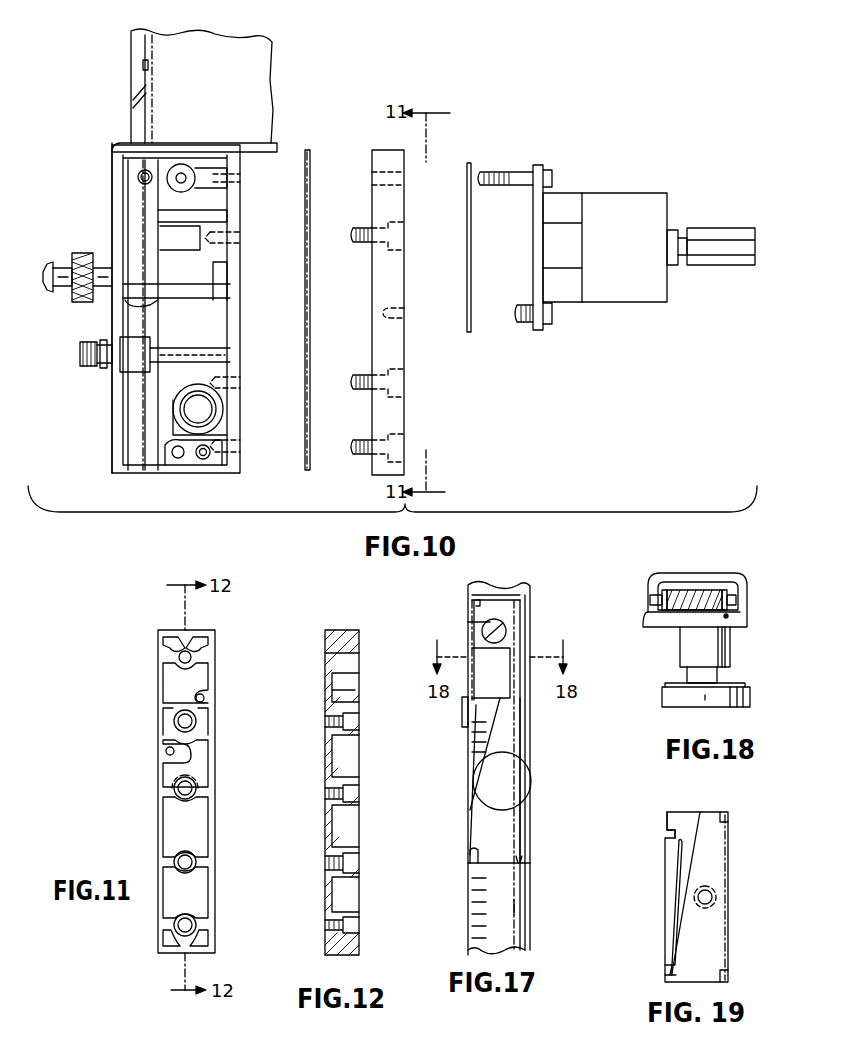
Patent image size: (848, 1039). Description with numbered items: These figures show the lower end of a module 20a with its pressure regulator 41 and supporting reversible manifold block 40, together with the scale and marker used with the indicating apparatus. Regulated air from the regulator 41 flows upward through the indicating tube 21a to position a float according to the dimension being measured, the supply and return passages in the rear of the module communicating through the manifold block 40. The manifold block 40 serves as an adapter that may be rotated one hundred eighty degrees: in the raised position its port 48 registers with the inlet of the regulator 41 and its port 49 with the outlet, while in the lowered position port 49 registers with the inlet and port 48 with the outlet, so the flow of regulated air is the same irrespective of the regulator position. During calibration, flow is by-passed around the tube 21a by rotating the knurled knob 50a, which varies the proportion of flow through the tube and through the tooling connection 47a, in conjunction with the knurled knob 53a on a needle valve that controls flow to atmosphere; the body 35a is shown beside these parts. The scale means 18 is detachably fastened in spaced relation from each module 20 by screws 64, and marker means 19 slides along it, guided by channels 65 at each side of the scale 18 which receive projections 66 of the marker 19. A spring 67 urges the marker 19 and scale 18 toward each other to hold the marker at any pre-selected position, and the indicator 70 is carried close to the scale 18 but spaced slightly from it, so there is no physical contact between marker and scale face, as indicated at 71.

In FIG. 10, the indicating tube 21a is at (131, 46).
In FIG. 10, the module 20a is at (101, 112).
In FIG. 10, the knurled knob 50a is at (82, 254).
In FIG. 10, the knurled knob 53a is at (52, 262).
In FIG. 10, the tooling connection 47a is at (80, 350).
In FIG. 10, the housing 35a is at (240, 417).
In FIG. 10, the manifold block 40 is at (416, 419).
In FIG. 11, the manifold block 40 is at (148, 830).
In FIG. 12, the manifold block 40 is at (315, 835).
In FIG. 10, the regulator 41 is at (624, 186).
In FIG. 11, the port 48 is at (166, 751).
In FIG. 11, the port 49 is at (205, 698).
In FIG. 12, the port 49 is at (362, 686).
In FIG. 17, the module 20 is at (519, 581).
In FIG. 17, the scale means 18 is at (505, 607).
In FIG. 18, the scale means 18 is at (700, 594).
In FIG. 17, the screws 64 is at (506, 632).
In FIG. 17, the channels 65 is at (474, 603).
In FIG. 18, the channels 65 is at (680, 590).
In FIG. 18, the projections 66 is at (650, 601).
In FIG. 19, the projections 66 is at (668, 818).
In FIG. 17, the spring 67 is at (467, 758).
In FIG. 19, the spring 67 is at (676, 868).
In FIG. 17, the marker means 19 is at (512, 833).
In FIG. 19, the marker means 19 is at (722, 874).
In FIG. 17, the indicator 70 is at (470, 858).
In FIG. 18, the indicator 70 is at (651, 623).
In FIG. 19, the indicator 70 is at (686, 950).
In FIG. 18, the spacing between marker and scale face 71 is at (730, 617).